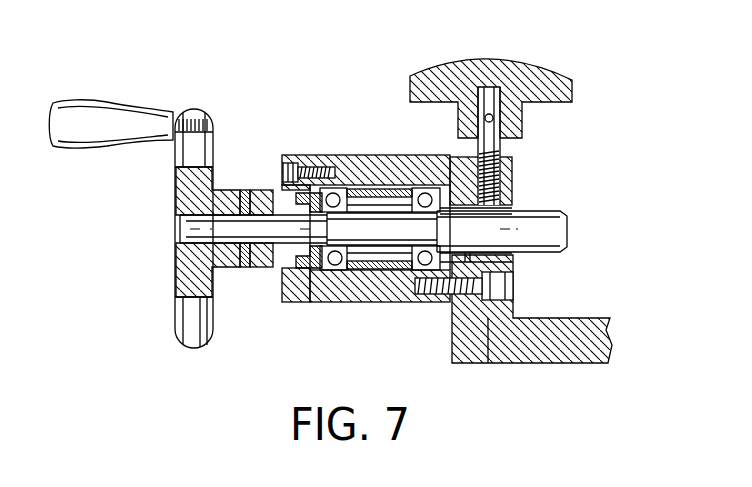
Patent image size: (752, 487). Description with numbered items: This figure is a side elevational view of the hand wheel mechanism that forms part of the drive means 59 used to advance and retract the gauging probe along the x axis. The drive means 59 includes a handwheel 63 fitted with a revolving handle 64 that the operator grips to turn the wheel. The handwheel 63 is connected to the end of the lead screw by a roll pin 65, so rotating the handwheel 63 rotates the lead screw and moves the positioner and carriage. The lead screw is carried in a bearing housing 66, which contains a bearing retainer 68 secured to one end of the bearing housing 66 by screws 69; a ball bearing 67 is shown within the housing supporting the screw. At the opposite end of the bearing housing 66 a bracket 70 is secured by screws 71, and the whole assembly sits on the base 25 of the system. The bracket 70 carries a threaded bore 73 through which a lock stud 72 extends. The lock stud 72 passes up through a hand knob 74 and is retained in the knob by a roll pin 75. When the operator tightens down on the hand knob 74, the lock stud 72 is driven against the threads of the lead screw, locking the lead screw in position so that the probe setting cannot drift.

The drive means 59 is at (366, 55).
The revolving handle 64 is at (104, 103).
The handwheel 63 is at (175, 318).
The roll pin 65 is at (247, 190).
The bearing housing 66 is at (373, 163).
The screws 69 is at (316, 164).
The bearing retainer 68 is at (288, 292).
The ball bearing 67 is at (339, 266).
The bracket 70 is at (512, 168).
The hand knob 74 is at (537, 66).
The roll pin 75 is at (502, 130).
The threaded bore 73 is at (484, 158).
The lock stud 72 is at (492, 195).
The screws 71 is at (512, 290).
The base 25 is at (540, 364).